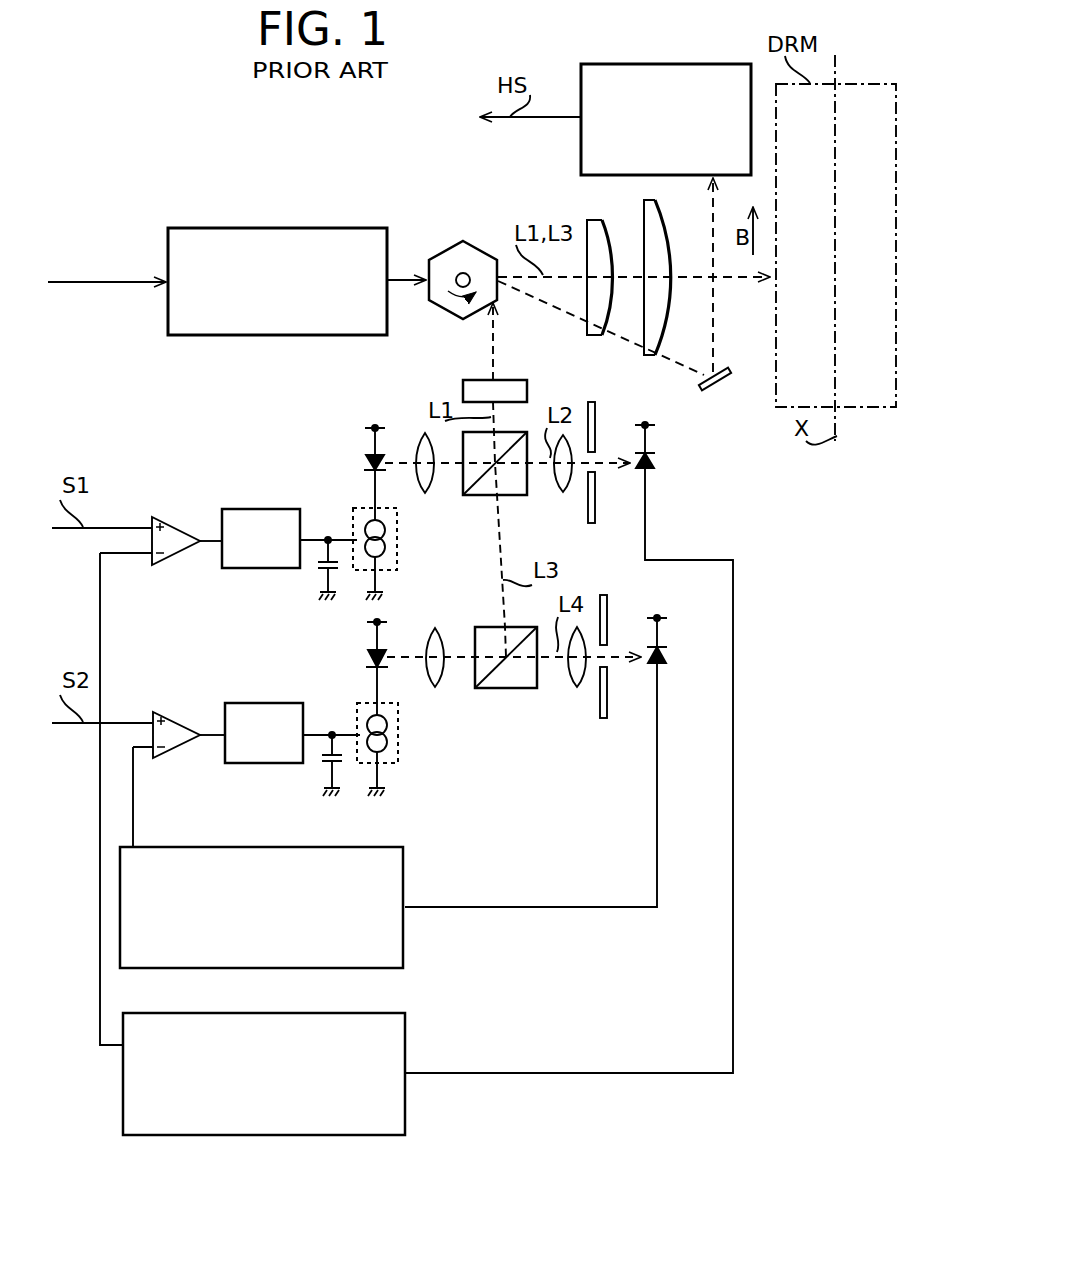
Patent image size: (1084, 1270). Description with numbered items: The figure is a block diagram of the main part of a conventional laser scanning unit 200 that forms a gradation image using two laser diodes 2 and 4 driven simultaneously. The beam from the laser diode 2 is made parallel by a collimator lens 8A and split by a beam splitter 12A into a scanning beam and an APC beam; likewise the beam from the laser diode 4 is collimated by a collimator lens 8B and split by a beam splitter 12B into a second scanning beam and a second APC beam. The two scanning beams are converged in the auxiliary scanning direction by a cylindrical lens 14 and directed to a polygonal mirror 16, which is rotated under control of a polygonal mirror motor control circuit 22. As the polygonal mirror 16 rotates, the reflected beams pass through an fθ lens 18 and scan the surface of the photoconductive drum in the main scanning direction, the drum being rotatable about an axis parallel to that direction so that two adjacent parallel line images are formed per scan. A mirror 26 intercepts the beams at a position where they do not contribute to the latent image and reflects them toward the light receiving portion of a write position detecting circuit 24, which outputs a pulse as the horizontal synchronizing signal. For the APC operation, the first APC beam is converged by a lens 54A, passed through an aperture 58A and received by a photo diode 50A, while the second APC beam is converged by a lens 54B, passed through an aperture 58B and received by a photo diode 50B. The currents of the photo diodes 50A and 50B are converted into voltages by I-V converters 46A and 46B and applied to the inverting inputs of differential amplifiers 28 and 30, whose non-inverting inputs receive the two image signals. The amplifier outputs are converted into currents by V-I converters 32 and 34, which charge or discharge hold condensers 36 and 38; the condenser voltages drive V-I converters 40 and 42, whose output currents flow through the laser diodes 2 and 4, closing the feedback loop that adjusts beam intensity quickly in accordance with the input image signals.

The laser scanning unit 200 is at (112, 236).
The laser diode 2 is at (366, 462).
The laser diode 4 is at (368, 657).
The collimator lens 8A is at (424, 494).
The collimator lens 8B is at (434, 690).
The beam splitter 12A is at (478, 497).
The beam splitter 12B is at (490, 690).
The cylindrical lens 14 is at (510, 379).
The polygonal mirror 16 is at (442, 249).
The fθ lens 18 is at (580, 201).
The polygonal mirror motor control circuit 22 is at (267, 228).
The write position detecting circuit 24 is at (617, 64).
The mirror 26 is at (712, 391).
The differential amplifier 28 is at (178, 521).
The differential amplifier 30 is at (180, 716).
The V-I converter 32 is at (285, 489).
The V-I converter 34 is at (287, 684).
The hold condenser 36 is at (318, 566).
The hold condenser 38 is at (322, 760).
The V-I converter 40 is at (400, 566).
The V-I converter 42 is at (400, 765).
The I-V converter 46A is at (405, 1036).
The I-V converter 46B is at (405, 868).
The photo diode 50A is at (650, 460).
The photo diode 50B is at (662, 657).
The lens 54A is at (567, 495).
The lens 54B is at (578, 690).
The aperture 58A is at (600, 515).
The aperture 58B is at (605, 712).